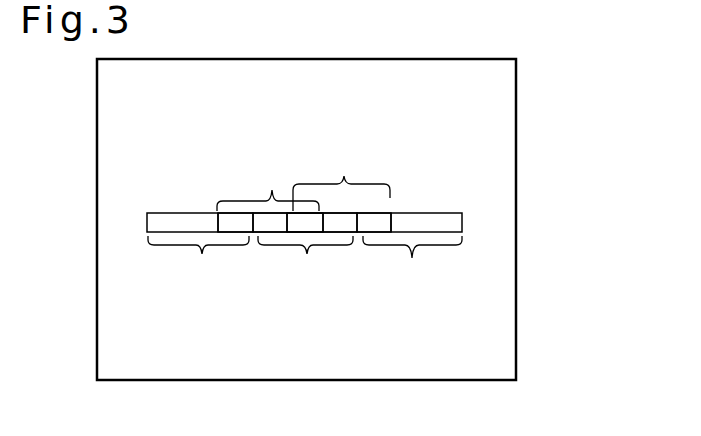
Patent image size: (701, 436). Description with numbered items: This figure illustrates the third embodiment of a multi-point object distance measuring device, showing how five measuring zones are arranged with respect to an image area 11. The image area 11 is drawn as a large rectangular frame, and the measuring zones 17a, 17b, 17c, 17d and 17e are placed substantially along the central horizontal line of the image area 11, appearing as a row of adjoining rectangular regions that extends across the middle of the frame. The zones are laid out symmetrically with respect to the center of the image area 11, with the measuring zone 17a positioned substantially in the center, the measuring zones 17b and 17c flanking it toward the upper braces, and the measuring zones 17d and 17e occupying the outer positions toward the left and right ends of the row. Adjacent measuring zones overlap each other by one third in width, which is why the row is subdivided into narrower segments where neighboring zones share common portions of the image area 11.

The image area 11 is at (508, 162).
The measuring zone 17a is at (307, 256).
The measuring zone 17b is at (272, 189).
The measuring zone 17c is at (344, 176).
The measuring zone 17d is at (202, 256).
The measuring zone 17e is at (412, 260).